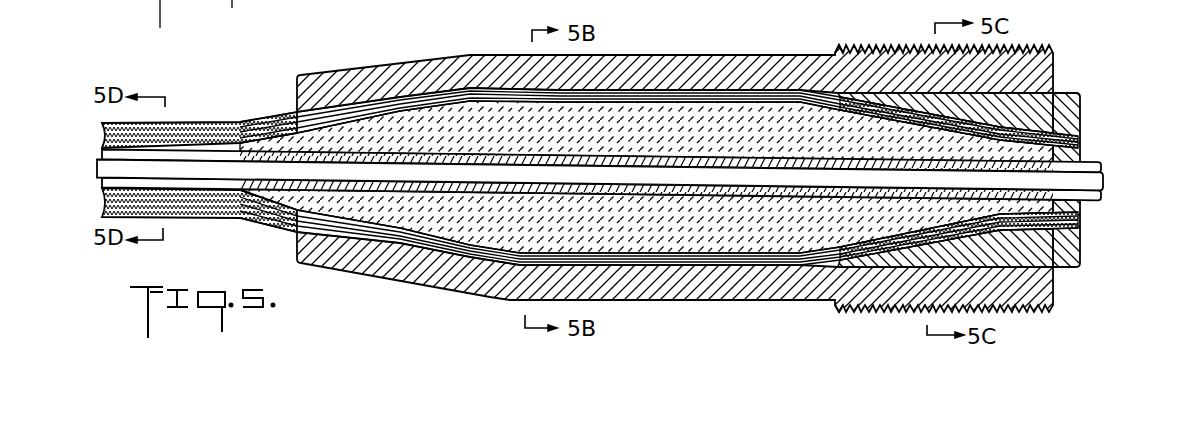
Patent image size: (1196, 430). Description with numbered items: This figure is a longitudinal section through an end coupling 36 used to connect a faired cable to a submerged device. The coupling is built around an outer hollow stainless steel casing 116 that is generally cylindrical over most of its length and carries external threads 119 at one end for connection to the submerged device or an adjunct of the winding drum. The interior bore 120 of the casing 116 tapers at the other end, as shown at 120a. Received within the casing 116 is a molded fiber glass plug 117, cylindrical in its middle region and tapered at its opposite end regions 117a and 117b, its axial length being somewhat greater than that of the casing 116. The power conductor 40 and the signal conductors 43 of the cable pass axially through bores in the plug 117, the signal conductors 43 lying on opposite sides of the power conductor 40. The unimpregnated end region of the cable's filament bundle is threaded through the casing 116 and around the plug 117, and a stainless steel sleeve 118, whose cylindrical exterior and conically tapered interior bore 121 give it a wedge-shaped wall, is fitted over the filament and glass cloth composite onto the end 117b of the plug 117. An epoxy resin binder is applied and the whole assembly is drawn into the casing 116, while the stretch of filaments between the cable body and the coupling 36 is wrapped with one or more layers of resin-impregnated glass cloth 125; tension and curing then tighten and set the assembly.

The end coupling 36 is at (458, 38).
The power conductor 40 is at (1100, 179).
The signal conductors 43 is at (1100, 158).
The outer hollow stainless steel casing 116 is at (664, 60).
The molded fiber glass plug 117 is at (719, 240).
The tapered end region of plug 117a is at (281, 137).
The tapered end region of plug 117b is at (972, 214).
The stainless steel sleeve 118 is at (1073, 96).
The external threads 119 is at (870, 307).
The interior bore 120 is at (645, 256).
The tapered portion of bore 120a is at (328, 231).
The conically tapered interior bore 121 is at (903, 103).
The resin-impregnated glass cloth 125 is at (200, 122).